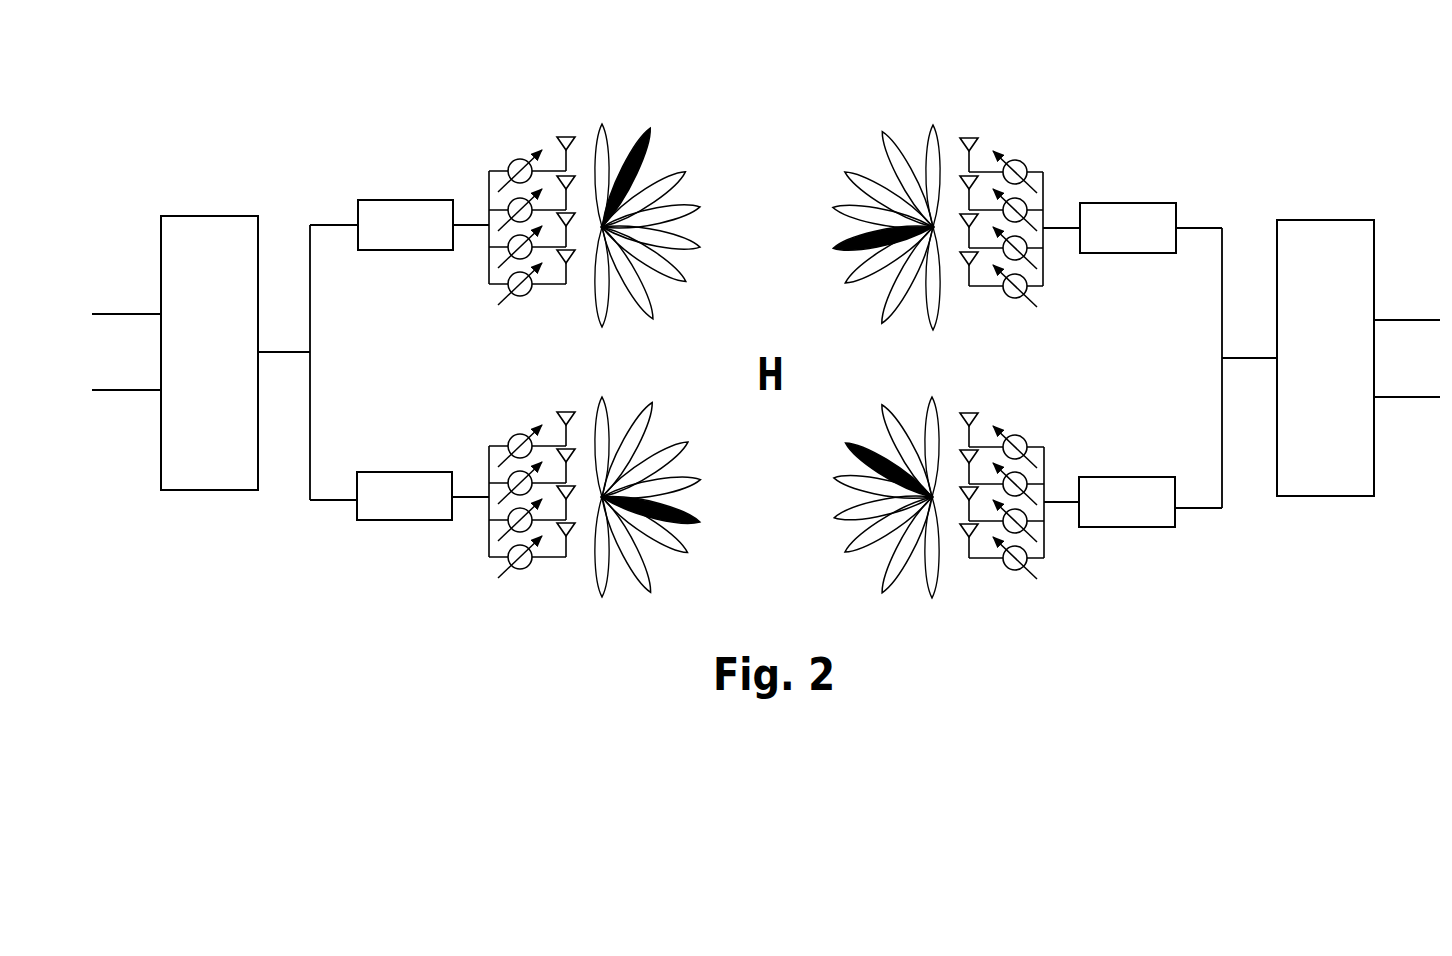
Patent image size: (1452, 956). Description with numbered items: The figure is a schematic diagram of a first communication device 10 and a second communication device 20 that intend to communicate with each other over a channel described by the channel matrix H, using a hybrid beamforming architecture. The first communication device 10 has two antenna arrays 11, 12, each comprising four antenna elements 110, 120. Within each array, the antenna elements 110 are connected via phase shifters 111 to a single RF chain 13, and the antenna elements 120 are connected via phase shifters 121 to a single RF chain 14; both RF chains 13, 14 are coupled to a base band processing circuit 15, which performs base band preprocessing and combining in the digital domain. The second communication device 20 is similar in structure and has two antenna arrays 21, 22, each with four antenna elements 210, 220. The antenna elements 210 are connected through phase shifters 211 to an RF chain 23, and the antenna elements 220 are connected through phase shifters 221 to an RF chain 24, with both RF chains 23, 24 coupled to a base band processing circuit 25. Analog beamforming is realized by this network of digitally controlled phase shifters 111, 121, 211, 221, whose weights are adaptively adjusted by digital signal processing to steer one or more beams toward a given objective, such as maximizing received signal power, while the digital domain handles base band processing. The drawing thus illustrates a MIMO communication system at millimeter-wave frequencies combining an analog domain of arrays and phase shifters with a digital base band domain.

The first communication device 10 is at (312, 125).
The antenna array 11 is at (527, 217).
The antenna elements 110 is at (563, 137).
The phase shifters 111 is at (520, 296).
The antenna array 12 is at (514, 503).
The antenna elements 120 is at (563, 410).
The phase shifters 121 is at (520, 565).
The RF chain 13 is at (398, 222).
The RF chain 14 is at (405, 510).
The base band processing circuit 15 is at (210, 477).
The second communication device 20 is at (1228, 128).
The antenna array 21 is at (1012, 220).
The antenna elements 210 is at (965, 137).
The phase shifters 211 is at (1015, 298).
The antenna array 22 is at (1024, 505).
The antenna elements 220 is at (967, 410).
The phase shifters 221 is at (1012, 567).
The RF chain 23 is at (1123, 221).
The RF chain 24 is at (1126, 515).
The base band processing circuit 25 is at (1325, 481).